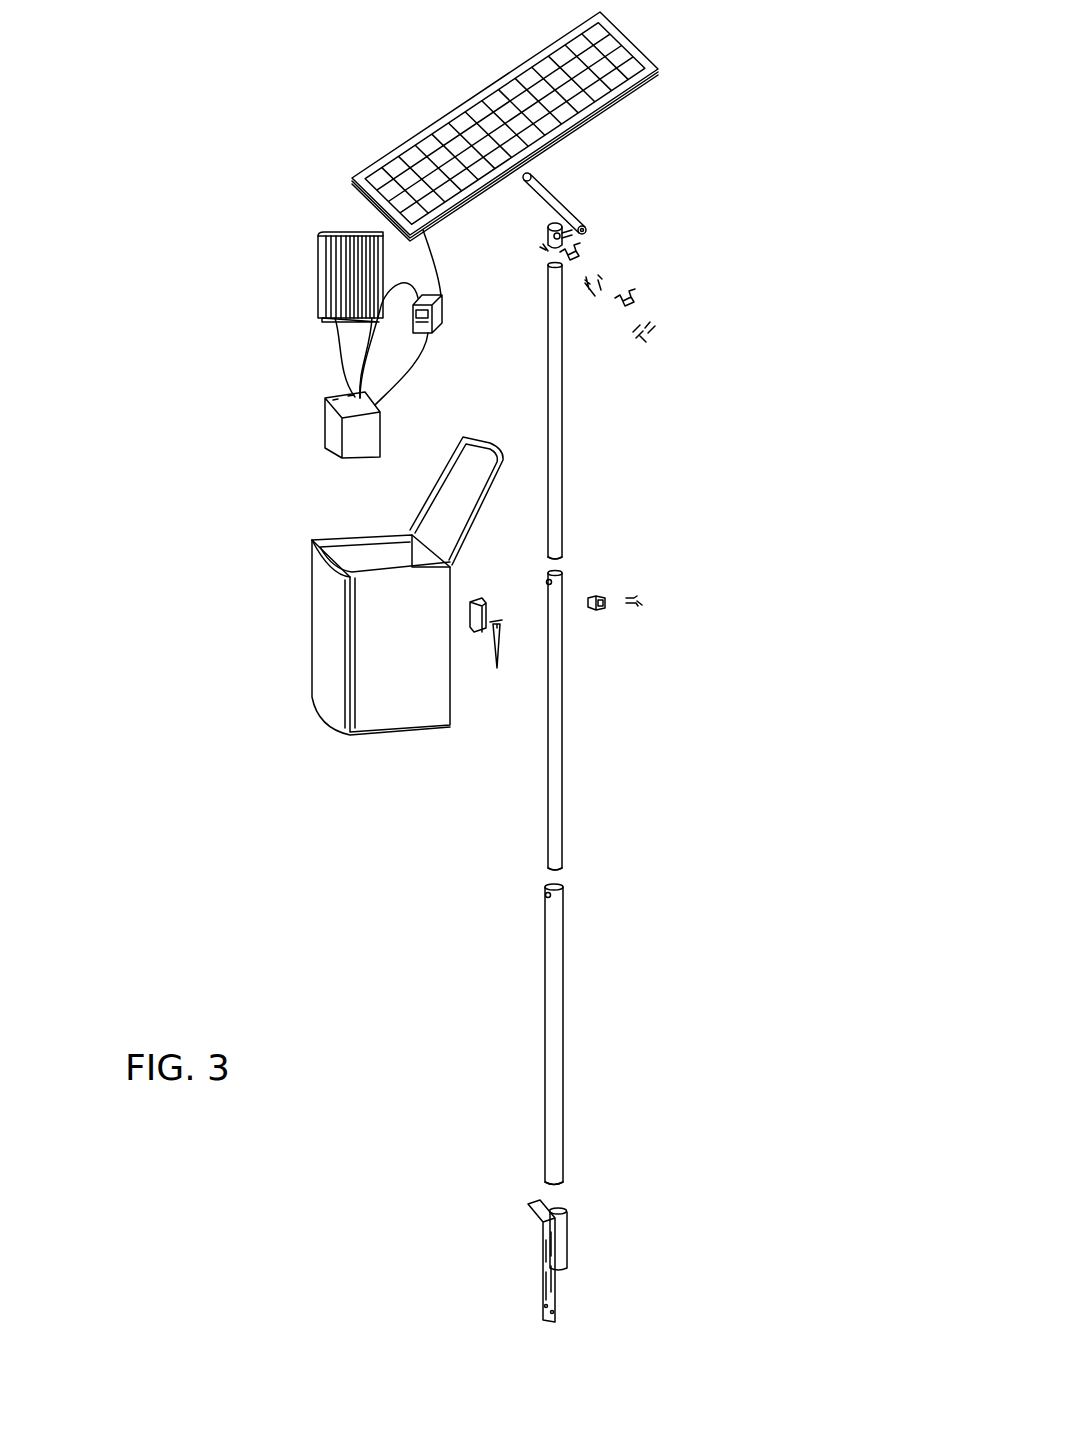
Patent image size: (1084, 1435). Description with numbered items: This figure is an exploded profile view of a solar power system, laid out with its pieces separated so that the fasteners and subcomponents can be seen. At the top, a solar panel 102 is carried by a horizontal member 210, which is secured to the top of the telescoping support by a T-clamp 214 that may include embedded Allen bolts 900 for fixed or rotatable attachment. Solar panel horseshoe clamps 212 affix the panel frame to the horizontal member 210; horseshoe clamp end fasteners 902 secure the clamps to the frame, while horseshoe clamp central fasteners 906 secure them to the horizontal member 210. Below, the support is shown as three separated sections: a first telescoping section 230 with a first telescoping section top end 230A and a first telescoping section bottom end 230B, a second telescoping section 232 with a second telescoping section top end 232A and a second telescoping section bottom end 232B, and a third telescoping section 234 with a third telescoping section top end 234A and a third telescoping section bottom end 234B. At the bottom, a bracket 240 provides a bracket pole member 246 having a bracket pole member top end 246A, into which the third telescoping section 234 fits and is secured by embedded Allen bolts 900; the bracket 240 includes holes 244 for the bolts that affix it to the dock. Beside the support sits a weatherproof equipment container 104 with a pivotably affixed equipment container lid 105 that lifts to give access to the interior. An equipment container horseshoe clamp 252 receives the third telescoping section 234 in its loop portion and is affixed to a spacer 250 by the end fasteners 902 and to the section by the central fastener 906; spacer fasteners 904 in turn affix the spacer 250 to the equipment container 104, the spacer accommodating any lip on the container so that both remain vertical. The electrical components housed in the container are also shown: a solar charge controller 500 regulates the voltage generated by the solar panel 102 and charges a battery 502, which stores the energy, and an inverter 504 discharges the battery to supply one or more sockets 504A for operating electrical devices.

The solar panel 102 is at (640, 72).
The equipment container 104 is at (370, 650).
The equipment container lid 105 is at (450, 495).
The horizontal member 210 is at (552, 200).
The solar panel horseshoe clamps 212 is at (630, 293).
The T-clamp 214 is at (573, 238).
The first telescoping section 230 is at (556, 450).
The first telescoping section top end 230A is at (558, 267).
The first telescoping section bottom end 230B is at (558, 555).
The second telescoping section 232 is at (558, 765).
The second telescoping section top end 232A is at (560, 573).
The second telescoping section bottom end 232B is at (550, 870).
The third telescoping section 234 is at (556, 995).
The third telescoping section top end 234A is at (560, 887).
The third telescoping section bottom end 234B is at (553, 1175).
The bracket 240 is at (543, 1248).
The holes 244 is at (540, 1278).
The bracket pole member 246 is at (560, 1240).
The bracket pole member top end 246A is at (565, 1210).
The spacer 250 is at (478, 605).
The equipment container horseshoe clamp 252 is at (600, 605).
The solar charge controller 500 is at (433, 327).
The battery 502 is at (328, 430).
The inverter 504 is at (355, 272).
The sockets 504A is at (363, 232).
The embedded Allen bolts 900 is at (548, 582).
The horseshoe clamp end fasteners 902 is at (640, 603).
The spacer fasteners 904 is at (507, 667).
The horseshoe clamp central fasteners 906 is at (648, 600).